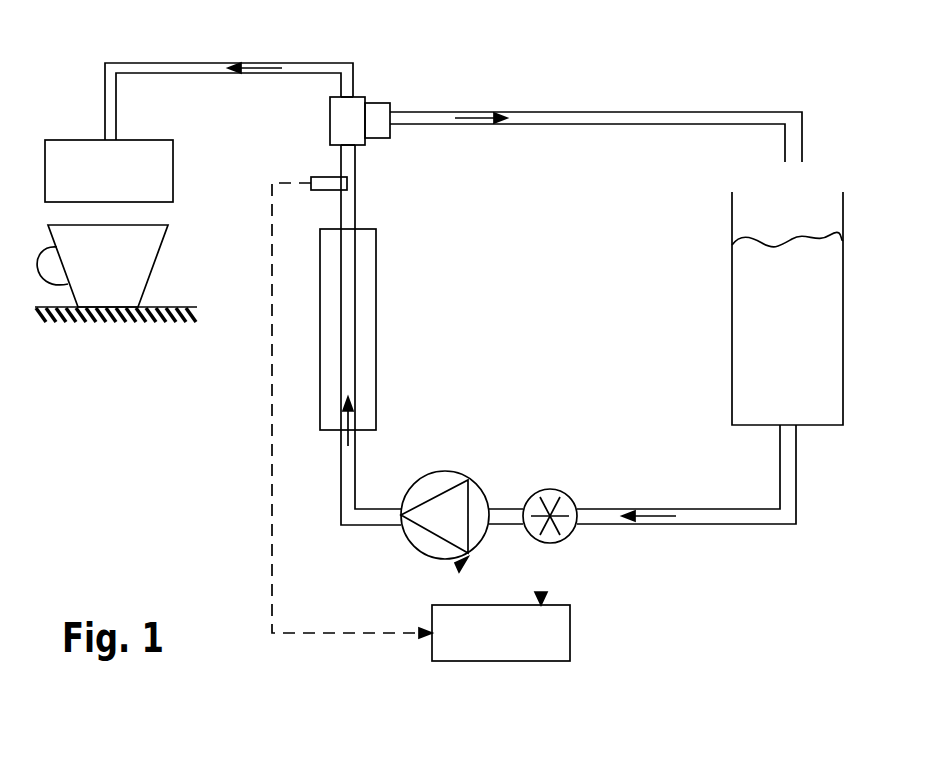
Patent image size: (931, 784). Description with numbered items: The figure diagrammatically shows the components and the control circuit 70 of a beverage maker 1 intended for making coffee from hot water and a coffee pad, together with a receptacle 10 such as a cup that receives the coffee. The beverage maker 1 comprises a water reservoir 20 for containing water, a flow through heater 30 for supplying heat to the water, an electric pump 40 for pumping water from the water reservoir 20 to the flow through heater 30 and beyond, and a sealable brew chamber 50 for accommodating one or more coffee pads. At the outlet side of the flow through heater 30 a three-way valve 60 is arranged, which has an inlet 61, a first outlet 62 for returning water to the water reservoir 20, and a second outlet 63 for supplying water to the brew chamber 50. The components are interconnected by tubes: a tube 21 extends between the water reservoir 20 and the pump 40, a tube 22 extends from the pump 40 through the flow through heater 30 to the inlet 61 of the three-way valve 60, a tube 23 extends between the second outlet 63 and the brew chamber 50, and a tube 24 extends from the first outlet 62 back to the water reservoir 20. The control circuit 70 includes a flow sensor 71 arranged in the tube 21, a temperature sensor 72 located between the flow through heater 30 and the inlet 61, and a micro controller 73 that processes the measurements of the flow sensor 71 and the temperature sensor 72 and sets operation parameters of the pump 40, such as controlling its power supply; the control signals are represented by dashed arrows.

The beverage maker 1 is at (196, 458).
The receptacle 10 is at (132, 260).
The water reservoir 20 is at (752, 358).
The tube 21 is at (718, 515).
The tube 22 is at (365, 517).
The tube 23 is at (313, 67).
The tube 24 is at (563, 117).
The flow through heater 30 is at (365, 312).
The electric pump 40 is at (435, 480).
The brew chamber 50 is at (74, 157).
The three-way valve 60 is at (348, 118).
The inlet 61 is at (352, 147).
The first outlet 62 is at (392, 117).
The second outlet 63 is at (348, 97).
The control circuit 70 is at (634, 632).
The flow sensor 71 is at (553, 502).
The temperature sensor 72 is at (328, 182).
The micro controller 73 is at (532, 642).